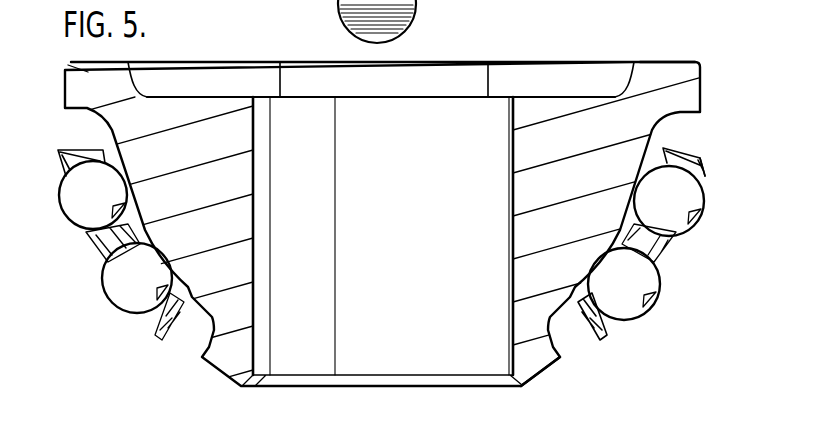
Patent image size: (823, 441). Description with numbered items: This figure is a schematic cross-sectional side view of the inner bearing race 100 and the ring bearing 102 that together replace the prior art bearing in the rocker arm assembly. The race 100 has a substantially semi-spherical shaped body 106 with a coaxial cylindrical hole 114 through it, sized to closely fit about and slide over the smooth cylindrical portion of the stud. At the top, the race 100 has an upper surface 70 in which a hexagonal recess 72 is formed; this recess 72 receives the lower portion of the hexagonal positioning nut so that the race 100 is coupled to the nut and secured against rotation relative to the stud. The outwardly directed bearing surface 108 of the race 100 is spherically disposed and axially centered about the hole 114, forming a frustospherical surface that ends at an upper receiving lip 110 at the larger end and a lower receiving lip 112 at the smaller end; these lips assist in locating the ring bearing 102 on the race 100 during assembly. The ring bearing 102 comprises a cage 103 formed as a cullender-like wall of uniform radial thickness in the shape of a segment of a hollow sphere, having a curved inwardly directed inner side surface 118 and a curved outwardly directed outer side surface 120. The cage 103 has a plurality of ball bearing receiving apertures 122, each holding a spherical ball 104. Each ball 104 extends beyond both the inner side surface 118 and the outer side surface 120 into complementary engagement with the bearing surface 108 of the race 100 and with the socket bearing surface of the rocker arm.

The upper surface 70 is at (112, 62).
The hexagonal recess 72 is at (217, 97).
The inner bearing race 100 is at (638, 117).
The ring bearing 102 is at (673, 257).
The cage 103 is at (63, 160).
The ball 104 is at (702, 206).
The semi-spherical shaped body 106 is at (657, 143).
The bearing surface 108 is at (588, 322).
The upper receiving lip 110 is at (660, 64).
The lower receiving lip 112 is at (547, 361).
The coaxial cylindrical hole 114 is at (315, 318).
The inner side surface 118 is at (112, 157).
The outer side surface 120 is at (100, 257).
The ball bearing receiving apertures 122 is at (705, 185).